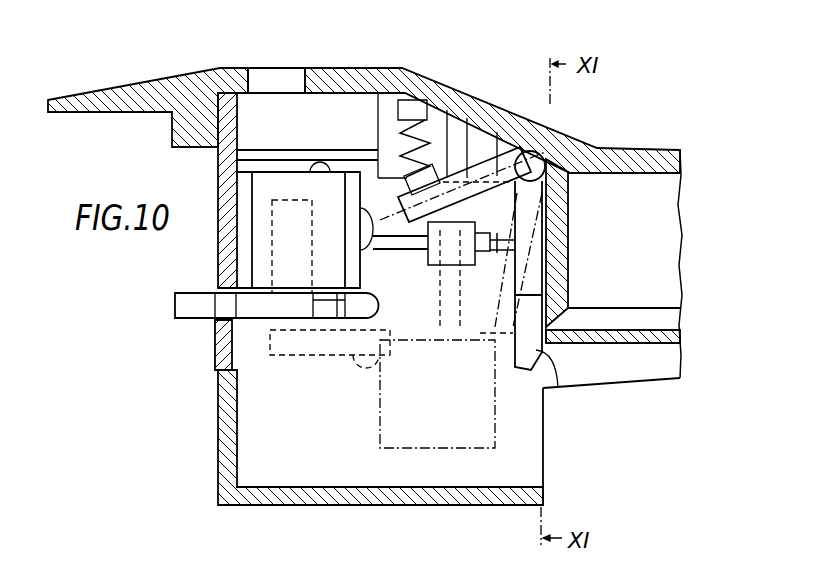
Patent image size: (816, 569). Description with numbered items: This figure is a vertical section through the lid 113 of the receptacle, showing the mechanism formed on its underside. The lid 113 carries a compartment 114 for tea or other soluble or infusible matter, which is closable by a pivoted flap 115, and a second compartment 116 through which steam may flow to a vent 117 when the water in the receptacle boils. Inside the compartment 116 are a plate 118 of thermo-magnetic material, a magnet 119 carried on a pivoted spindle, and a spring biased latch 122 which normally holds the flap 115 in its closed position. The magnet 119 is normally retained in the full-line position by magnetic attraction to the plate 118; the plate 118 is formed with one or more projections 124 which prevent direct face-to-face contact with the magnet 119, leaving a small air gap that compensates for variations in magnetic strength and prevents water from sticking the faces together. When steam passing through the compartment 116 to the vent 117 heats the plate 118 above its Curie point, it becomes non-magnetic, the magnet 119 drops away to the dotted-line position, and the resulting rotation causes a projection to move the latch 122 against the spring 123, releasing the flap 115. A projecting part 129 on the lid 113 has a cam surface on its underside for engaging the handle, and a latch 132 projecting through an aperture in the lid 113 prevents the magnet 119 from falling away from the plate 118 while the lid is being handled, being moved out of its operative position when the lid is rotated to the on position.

The lid 113 is at (660, 150).
The compartment 114 is at (642, 249).
The pivoted flap 115 is at (638, 345).
The compartment 116 is at (328, 429).
The vent 117 is at (287, 80).
The plate 118 is at (350, 152).
The magnet 119 is at (258, 240).
The spring biased latch 122 is at (540, 357).
The spring 123 is at (403, 168).
The projections 124 is at (322, 168).
The projecting part 129 is at (112, 112).
The latch 132 is at (195, 318).